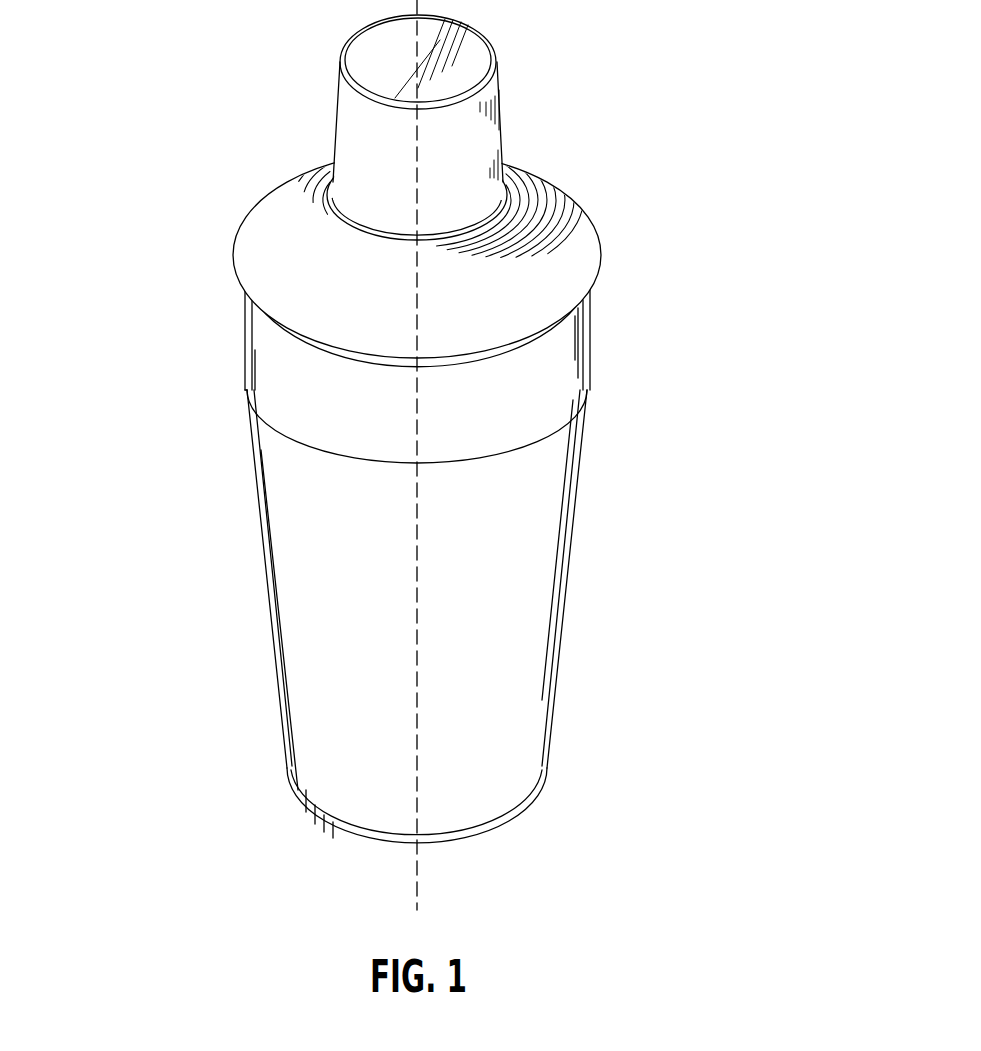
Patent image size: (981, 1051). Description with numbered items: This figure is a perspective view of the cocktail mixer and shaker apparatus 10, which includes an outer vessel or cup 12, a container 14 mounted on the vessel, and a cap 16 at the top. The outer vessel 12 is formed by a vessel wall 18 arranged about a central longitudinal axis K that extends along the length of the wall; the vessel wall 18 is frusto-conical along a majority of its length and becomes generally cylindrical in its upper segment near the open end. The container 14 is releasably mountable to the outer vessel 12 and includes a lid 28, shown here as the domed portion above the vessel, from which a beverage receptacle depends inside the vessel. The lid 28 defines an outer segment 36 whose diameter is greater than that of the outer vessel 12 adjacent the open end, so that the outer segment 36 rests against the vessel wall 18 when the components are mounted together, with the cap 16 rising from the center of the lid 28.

The apparatus 10 is at (145, 238).
The outer vessel 12 is at (575, 572).
The container 14 is at (582, 187).
The cap 16 is at (480, 125).
The vessel wall 18 is at (381, 647).
The lid 28 is at (576, 232).
The outer segment 36 is at (380, 327).
The central longitudinal axis K is at (417, 732).